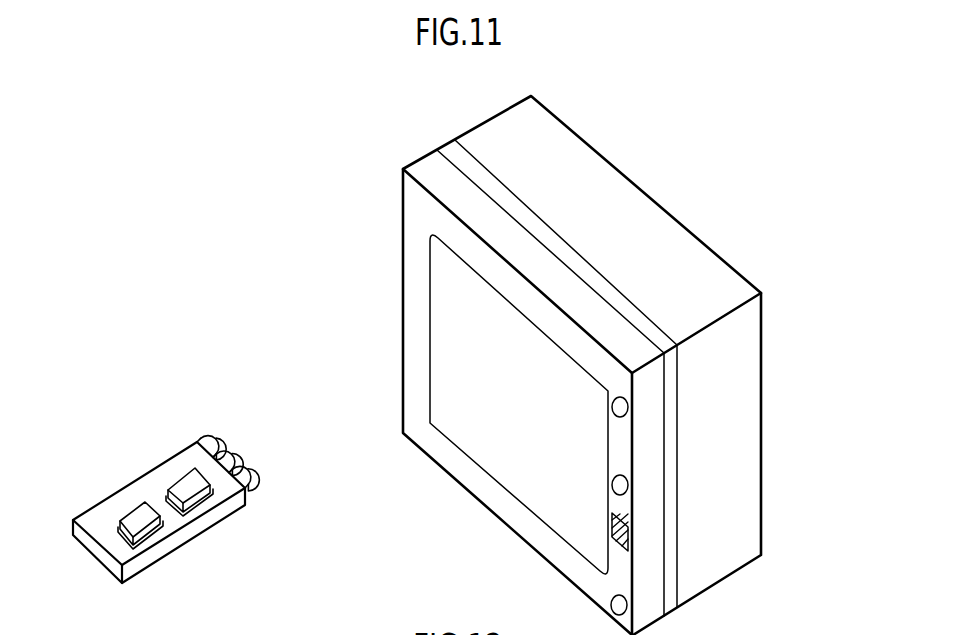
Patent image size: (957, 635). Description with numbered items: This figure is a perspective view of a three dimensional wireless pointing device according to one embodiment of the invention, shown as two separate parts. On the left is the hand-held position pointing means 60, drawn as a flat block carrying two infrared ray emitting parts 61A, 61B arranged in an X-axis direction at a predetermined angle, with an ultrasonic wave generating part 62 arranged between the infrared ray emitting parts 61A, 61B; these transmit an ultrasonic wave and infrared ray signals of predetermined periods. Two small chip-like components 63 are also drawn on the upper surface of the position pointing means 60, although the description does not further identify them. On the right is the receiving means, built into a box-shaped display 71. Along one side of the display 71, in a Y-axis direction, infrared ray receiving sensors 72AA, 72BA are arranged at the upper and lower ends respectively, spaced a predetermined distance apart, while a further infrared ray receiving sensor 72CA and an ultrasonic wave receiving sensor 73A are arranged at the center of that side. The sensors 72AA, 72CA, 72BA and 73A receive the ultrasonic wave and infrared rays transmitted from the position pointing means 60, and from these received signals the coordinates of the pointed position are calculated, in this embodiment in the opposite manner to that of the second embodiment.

The position pointing means 60 is at (98, 522).
The infrared ray emitting part 61A is at (208, 443).
The infrared ray emitting part 61B is at (253, 480).
The ultrasonic wave generating part 62 is at (223, 457).
The chips 63 is at (135, 518).
The display 71 is at (761, 428).
The infrared ray receiving sensor 72AA is at (628, 406).
The infrared ray receiving sensor 72CA is at (628, 484).
The infrared ray receiving sensor 72BA is at (627, 608).
The ultrasonic wave receiving sensor 73A is at (628, 532).